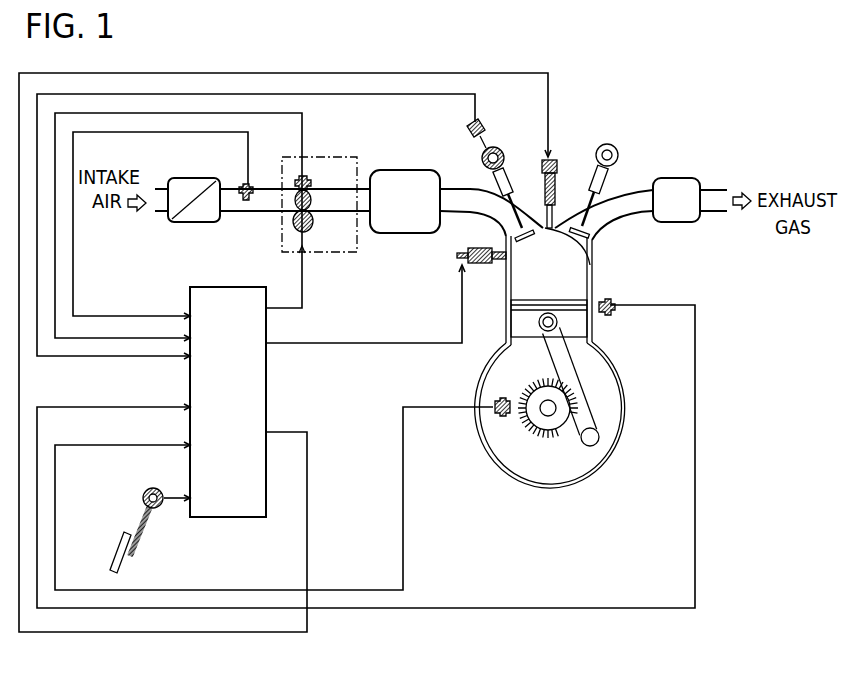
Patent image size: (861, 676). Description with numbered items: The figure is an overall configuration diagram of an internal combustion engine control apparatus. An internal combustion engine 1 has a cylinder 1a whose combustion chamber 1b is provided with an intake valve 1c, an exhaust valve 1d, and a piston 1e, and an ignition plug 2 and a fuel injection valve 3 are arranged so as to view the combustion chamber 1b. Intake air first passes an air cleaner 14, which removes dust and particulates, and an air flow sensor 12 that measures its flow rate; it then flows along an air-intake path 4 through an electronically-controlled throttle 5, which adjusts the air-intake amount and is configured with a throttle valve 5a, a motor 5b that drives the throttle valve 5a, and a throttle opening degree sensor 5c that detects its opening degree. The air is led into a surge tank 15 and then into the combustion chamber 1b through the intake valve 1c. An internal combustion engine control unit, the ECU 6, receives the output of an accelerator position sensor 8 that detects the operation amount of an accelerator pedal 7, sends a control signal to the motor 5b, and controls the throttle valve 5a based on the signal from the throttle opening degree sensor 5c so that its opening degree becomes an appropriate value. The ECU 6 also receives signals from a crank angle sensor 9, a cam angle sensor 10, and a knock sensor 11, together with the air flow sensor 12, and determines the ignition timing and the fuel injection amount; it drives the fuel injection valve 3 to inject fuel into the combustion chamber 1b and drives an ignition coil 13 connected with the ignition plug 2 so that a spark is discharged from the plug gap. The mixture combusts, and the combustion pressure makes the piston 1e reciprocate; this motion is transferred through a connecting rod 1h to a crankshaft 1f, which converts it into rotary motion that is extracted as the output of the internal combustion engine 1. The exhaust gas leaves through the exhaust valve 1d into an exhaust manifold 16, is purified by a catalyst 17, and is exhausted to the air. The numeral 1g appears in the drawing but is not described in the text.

The internal combustion engine 1 is at (549, 347).
The cylinder 1a is at (507, 292).
The combustion chamber 1b is at (532, 262).
The intake valve 1c is at (504, 232).
The exhaust valve 1d is at (593, 243).
The piston 1e is at (572, 318).
The crankshaft 1f is at (510, 421).
The intake valve 1g is at (481, 158).
The connecting rod 1h is at (563, 365).
The ignition plug 2 is at (593, 259).
The fuel injection valve 3 is at (460, 256).
The air-intake path 4 is at (256, 215).
The electronically-controlled throttle 5 is at (307, 186).
The throttle valve 5a is at (311, 199).
The motor 5b is at (313, 224).
The throttle opening degree sensor 5c is at (306, 176).
The internal combustion engine control unit (ECU) 6 is at (228, 518).
The accelerator pedal 7 is at (121, 548).
The accelerator position sensor 8 is at (143, 496).
The crank angle sensor 9 is at (493, 402).
The cam angle sensor 10 is at (468, 127).
The knock sensor 11 is at (616, 302).
The air flow sensor 12 is at (244, 183).
The ignition coil 13 is at (542, 162).
The air cleaner 14 is at (190, 178).
The surge tank 15 is at (406, 170).
The exhaust manifold 16 is at (632, 216).
The catalyst 17 is at (672, 178).